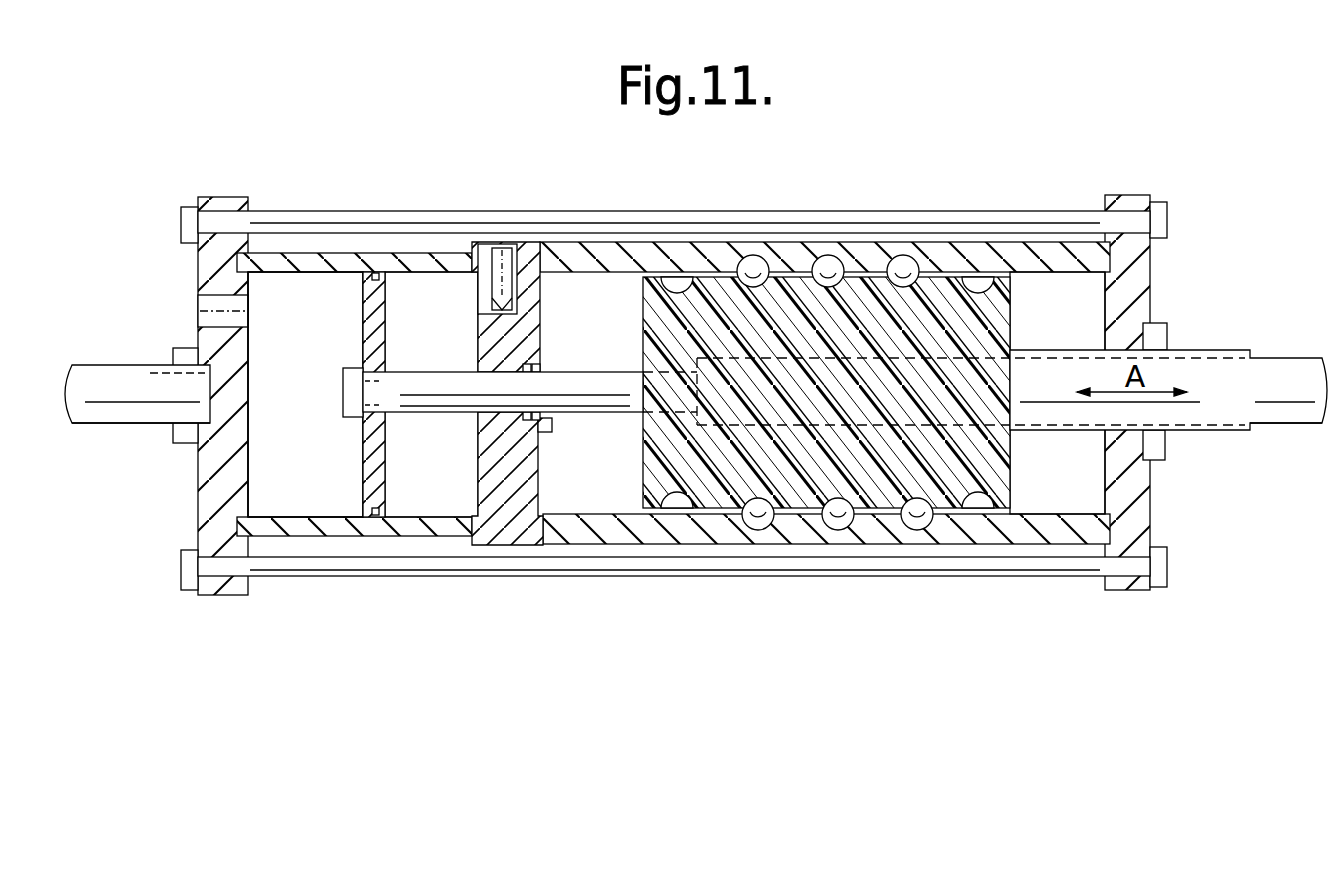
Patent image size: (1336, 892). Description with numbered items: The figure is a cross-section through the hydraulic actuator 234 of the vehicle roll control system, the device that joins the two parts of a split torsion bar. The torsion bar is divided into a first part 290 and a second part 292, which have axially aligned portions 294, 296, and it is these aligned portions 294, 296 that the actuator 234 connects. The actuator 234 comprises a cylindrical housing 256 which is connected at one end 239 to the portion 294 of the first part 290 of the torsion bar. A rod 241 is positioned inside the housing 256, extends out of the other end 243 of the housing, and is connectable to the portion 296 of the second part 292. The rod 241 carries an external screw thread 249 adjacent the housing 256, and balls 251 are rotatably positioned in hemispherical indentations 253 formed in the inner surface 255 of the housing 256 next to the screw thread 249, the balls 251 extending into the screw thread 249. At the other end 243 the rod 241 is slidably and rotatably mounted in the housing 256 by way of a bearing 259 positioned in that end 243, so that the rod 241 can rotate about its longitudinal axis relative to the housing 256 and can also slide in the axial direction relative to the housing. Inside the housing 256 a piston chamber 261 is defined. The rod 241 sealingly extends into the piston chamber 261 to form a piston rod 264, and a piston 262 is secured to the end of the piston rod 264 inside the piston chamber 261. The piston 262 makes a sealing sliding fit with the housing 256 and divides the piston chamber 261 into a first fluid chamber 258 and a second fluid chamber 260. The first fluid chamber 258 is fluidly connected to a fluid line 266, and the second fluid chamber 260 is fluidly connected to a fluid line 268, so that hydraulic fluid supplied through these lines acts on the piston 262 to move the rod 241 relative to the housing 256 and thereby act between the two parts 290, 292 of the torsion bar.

The hydraulic actuator 234 is at (832, 175).
The one end of the housing 239 is at (213, 500).
The rod 241 is at (1015, 313).
The other end of the housing 243 is at (1125, 500).
The external screw thread 249 is at (725, 485).
The balls 251 is at (840, 532).
The hemispherical indentations 253 is at (920, 515).
The inner surface of the housing 255 is at (1057, 505).
The cylindrical housing 256 is at (582, 545).
The first fluid chamber 258 is at (281, 282).
The bearing 259 is at (1150, 328).
The second fluid chamber 260 is at (435, 290).
The piston chamber 261 is at (332, 487).
The piston 262 is at (366, 282).
The piston rod 264 is at (435, 405).
The fluid line 266 is at (200, 310).
The fluid line 268 is at (511, 272).
The first part of the torsion bar 290 is at (113, 425).
The second part of the torsion bar 292 is at (1287, 433).
The portion of the first part 294 is at (118, 380).
The portion of the second part 296 is at (1287, 375).